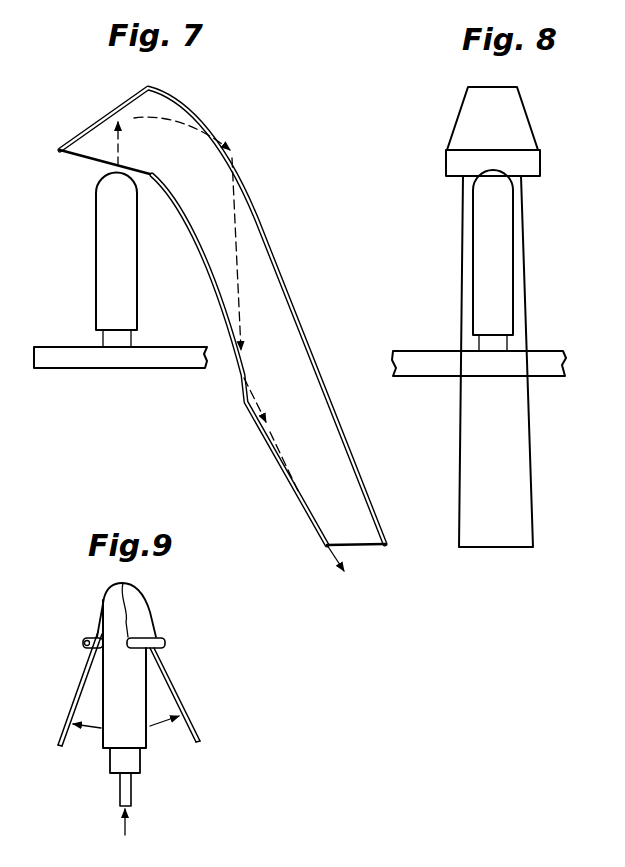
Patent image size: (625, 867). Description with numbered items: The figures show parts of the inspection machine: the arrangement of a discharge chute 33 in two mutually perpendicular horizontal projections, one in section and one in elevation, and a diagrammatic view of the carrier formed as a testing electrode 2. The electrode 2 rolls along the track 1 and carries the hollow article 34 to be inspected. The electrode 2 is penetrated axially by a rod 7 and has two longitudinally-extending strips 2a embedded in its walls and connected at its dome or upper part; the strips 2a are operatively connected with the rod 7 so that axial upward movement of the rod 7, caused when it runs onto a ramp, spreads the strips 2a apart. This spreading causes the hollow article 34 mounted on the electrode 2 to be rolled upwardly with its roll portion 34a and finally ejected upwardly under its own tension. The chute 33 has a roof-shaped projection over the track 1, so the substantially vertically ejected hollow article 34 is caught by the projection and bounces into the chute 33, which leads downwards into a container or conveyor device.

In FIG. 7, the track 1 is at (47, 369).
In FIG. 8, the track 1 is at (422, 359).
In FIG. 7, the electrode 2 is at (100, 243).
In FIG. 8, the electrode 2 is at (510, 226).
In FIG. 9, the electrode 2 is at (106, 739).
In FIG. 9, the strips 2a is at (77, 678).
In FIG. 9, the rod 7 is at (119, 797).
In FIG. 7, the chute 33 is at (252, 216).
In FIG. 8, the chute 33 is at (466, 112).
In FIG. 9, the hollow article 34 is at (143, 615).
In FIG. 9, the roll portion 34a is at (167, 643).